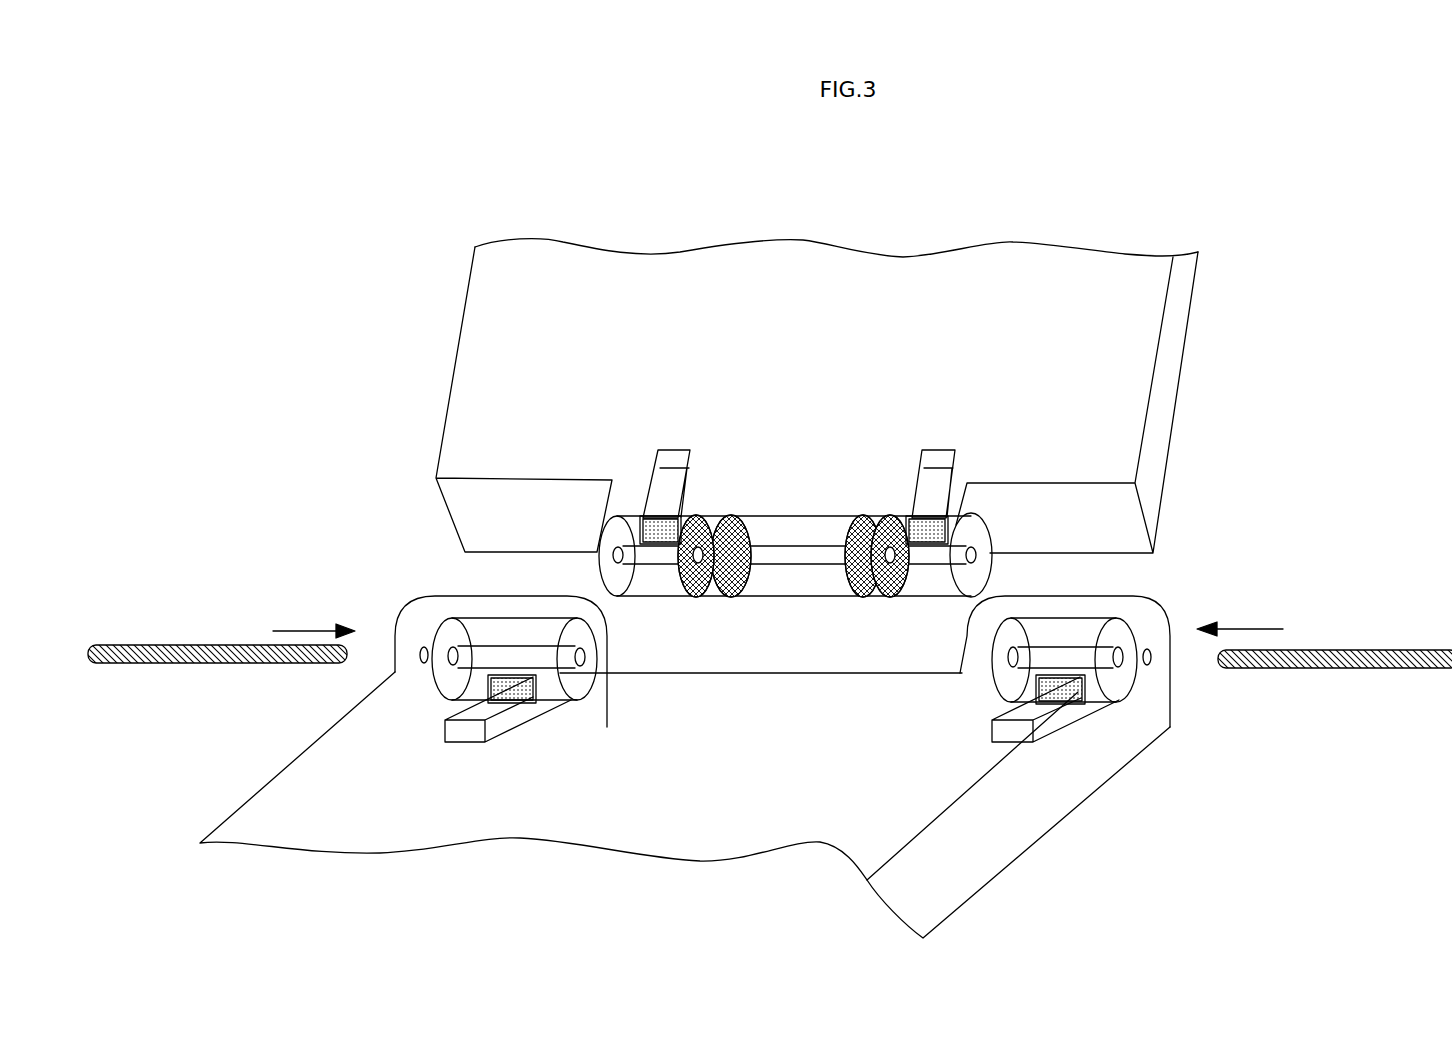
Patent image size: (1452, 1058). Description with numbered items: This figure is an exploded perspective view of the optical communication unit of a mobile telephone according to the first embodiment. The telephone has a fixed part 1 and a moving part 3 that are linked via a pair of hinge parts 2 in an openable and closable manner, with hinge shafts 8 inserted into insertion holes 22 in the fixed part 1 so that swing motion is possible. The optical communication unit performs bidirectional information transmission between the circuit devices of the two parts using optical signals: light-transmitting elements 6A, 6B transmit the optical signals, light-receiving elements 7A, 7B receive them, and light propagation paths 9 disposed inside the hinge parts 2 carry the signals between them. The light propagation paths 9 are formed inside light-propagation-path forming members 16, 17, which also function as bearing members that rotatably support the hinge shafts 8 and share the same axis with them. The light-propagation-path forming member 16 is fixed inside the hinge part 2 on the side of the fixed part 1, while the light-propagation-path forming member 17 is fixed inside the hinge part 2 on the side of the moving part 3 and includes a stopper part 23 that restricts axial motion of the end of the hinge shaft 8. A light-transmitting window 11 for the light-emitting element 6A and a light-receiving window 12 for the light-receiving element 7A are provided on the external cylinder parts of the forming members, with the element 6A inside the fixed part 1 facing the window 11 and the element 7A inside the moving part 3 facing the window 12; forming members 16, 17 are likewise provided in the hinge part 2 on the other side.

The fixed part 1 is at (865, 813).
The hinge parts 2 is at (759, 594).
The moving part 3 is at (1093, 347).
The light-transmitting element 6A is at (468, 730).
The light-transmitting element 6B is at (963, 482).
The light-receiving element 7A is at (668, 479).
The light-receiving element 7B is at (1067, 710).
The hinge shaft 8 is at (183, 643).
The light propagation path 9 is at (648, 580).
The light-transmitting window 11 is at (927, 520).
The light-receiving window 12 is at (665, 527).
The light-propagation-path forming member 16 is at (550, 695).
The light-propagation-path forming member 17 is at (665, 587).
The insertion hole 22 is at (418, 655).
The stopper part 23 is at (730, 515).